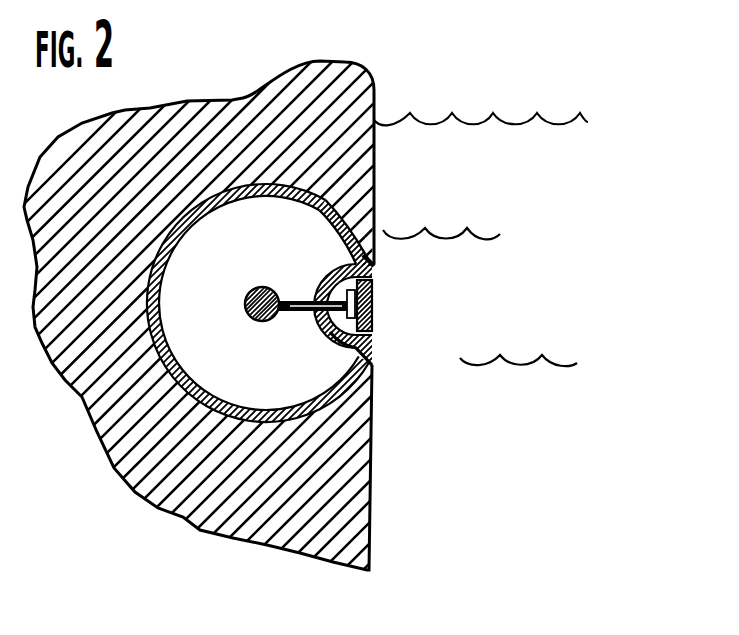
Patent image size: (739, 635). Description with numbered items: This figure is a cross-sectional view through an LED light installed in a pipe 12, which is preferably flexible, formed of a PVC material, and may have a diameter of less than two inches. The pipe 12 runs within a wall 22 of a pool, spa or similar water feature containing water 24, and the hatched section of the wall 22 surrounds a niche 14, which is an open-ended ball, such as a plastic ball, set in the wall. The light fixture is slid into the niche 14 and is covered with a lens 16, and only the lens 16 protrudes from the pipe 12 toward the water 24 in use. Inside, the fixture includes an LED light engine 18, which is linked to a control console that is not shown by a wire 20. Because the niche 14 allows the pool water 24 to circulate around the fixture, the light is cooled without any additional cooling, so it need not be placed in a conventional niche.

The pipe 12 is at (317, 413).
The niche 14 is at (373, 272).
The lens 16 is at (372, 297).
The LED light engine 18 is at (365, 339).
The wire 20 is at (268, 322).
The wall 22 is at (99, 313).
The water 24 is at (527, 294).